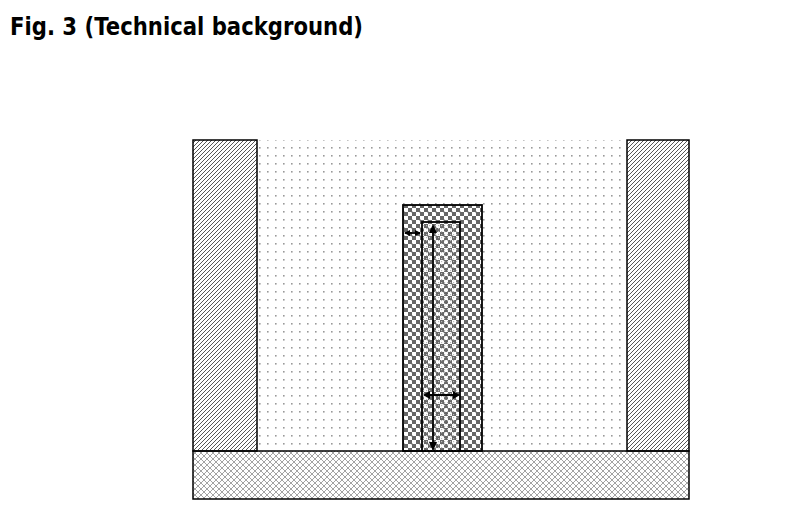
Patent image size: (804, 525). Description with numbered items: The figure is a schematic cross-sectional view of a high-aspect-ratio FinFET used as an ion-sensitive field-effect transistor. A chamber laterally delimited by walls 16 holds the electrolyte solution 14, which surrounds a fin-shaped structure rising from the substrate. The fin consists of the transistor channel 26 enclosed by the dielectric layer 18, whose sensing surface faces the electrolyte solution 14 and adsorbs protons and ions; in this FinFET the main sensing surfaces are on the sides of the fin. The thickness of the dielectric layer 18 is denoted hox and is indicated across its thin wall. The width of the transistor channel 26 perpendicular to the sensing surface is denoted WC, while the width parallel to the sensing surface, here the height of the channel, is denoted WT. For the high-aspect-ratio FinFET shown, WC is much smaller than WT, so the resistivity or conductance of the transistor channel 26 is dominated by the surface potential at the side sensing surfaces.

The electrolyte solution 14 is at (314, 203).
The walls 16 is at (655, 310).
The dielectric layer 18 is at (484, 212).
The transistor channel 26 is at (445, 290).
The thickness of the dielectric layer hox is at (419, 222).
The width of the transistor channel parallel to the sensing surface WT is at (434, 425).
The width of the transistor channel perpendicular to the sensing surface WC is at (460, 393).